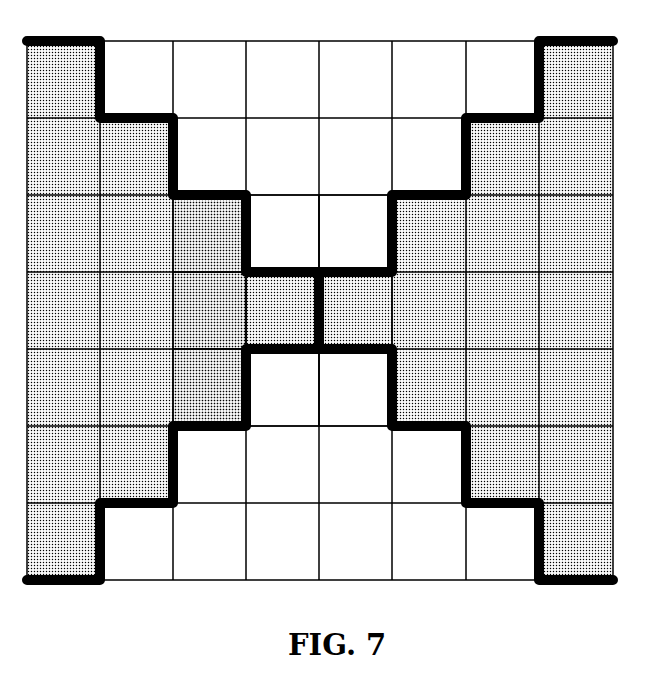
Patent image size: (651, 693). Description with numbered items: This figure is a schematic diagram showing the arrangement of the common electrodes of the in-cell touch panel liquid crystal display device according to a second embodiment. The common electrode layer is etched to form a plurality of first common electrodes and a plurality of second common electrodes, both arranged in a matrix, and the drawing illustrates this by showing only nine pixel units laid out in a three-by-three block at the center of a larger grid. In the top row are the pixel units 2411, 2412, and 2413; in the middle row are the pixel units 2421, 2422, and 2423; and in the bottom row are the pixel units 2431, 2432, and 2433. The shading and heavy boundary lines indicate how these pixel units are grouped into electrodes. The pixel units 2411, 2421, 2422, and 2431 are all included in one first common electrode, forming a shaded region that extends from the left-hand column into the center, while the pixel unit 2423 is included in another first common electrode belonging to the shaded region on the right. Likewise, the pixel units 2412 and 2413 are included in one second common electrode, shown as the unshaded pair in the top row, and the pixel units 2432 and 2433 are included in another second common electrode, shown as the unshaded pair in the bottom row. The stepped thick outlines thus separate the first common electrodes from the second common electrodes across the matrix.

The pixel unit 2411 is at (209, 233).
The pixel unit 2412 is at (282, 233).
The pixel unit 2413 is at (355, 233).
The pixel unit 2421 is at (209, 310).
The pixel unit 2422 is at (282, 310).
The pixel unit 2423 is at (355, 310).
The pixel unit 2431 is at (209, 387).
The pixel unit 2432 is at (282, 387).
The pixel unit 2433 is at (355, 387).